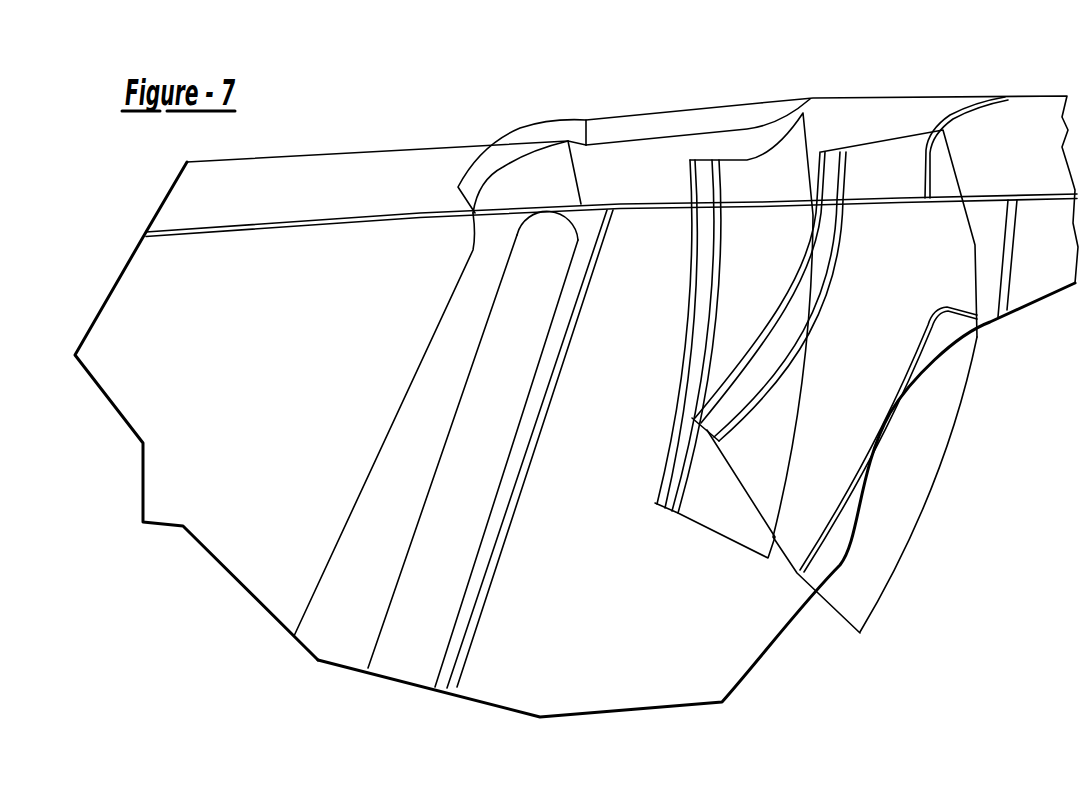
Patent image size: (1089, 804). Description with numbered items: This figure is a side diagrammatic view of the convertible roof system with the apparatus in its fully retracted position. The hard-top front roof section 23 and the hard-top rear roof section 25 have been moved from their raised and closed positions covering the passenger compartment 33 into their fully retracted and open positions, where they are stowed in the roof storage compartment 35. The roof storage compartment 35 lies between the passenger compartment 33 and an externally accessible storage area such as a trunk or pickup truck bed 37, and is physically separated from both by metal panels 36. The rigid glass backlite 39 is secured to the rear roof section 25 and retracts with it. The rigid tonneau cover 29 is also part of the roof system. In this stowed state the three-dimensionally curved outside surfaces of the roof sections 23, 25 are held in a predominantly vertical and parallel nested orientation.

The hard-top front roof section 23 is at (727, 515).
The hard-top rear roof section 25 is at (890, 157).
The rigid tonneau cover 29 is at (853, 123).
The passenger compartment 33 is at (241, 483).
The roof storage compartment 35 is at (683, 647).
The metal panels 36 is at (482, 613).
The trunk or pickup truck bed 37 is at (1055, 156).
The backlite 39 is at (897, 500).